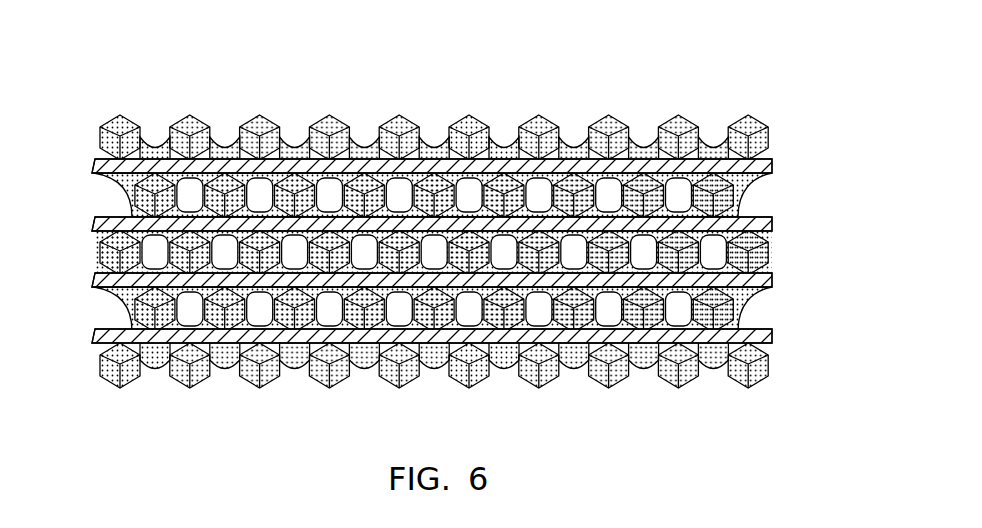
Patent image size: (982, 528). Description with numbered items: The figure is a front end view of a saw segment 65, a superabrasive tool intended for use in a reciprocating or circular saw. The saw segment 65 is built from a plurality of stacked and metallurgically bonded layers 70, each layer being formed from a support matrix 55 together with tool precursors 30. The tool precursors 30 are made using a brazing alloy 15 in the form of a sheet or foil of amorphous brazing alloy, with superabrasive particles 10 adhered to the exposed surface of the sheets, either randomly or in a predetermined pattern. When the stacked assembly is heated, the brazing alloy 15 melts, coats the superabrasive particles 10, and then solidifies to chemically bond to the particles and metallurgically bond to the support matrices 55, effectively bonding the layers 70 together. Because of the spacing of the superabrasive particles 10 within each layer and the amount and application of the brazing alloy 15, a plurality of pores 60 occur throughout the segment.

The superabrasive particles 10 is at (103, 382).
The brazing alloy 15 is at (150, 367).
The tool precursors 30 is at (458, 360).
The support matrix 55 is at (773, 224).
The pores 60 is at (607, 316).
The saw segment 65 is at (634, 112).
The layers 70 is at (786, 155).